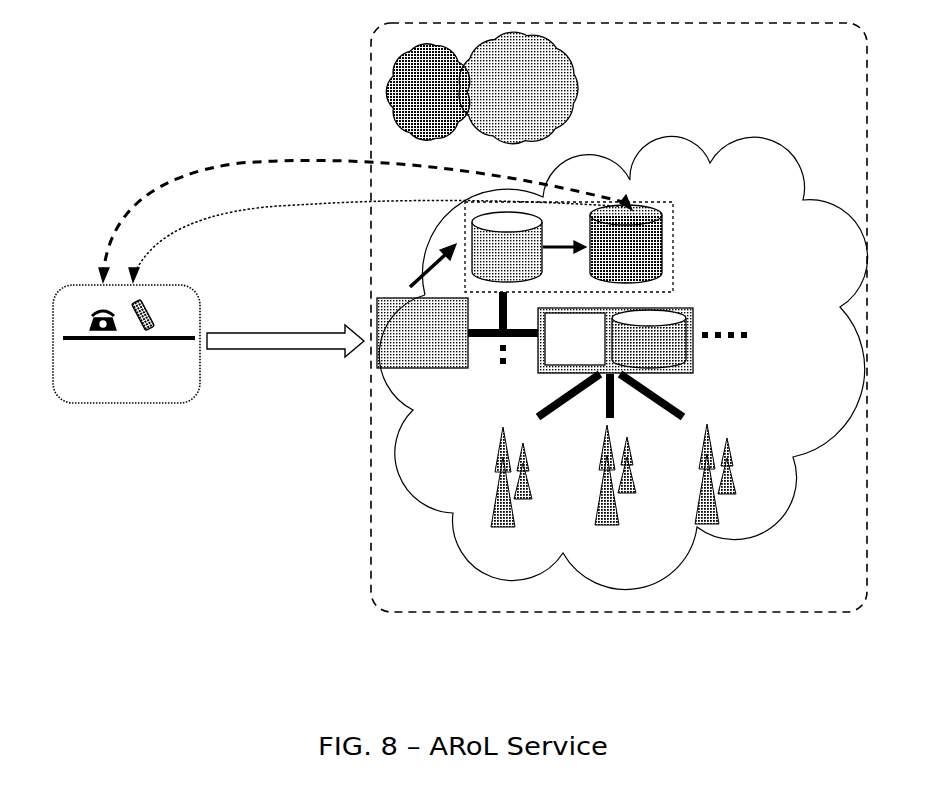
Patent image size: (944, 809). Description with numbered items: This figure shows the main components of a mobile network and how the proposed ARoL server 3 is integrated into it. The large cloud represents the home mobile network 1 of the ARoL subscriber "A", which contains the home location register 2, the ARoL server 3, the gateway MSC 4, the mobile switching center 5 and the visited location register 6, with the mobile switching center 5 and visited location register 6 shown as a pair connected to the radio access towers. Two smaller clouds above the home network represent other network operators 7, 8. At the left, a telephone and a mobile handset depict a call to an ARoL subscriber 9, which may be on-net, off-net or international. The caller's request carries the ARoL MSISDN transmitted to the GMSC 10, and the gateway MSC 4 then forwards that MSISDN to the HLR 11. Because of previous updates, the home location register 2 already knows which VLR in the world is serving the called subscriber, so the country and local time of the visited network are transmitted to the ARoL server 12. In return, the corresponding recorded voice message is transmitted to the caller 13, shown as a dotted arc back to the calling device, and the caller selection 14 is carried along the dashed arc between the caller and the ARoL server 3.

The home mobile network 1 is at (623, 362).
The home location register 2 is at (507, 247).
The ARoL server 3 is at (626, 244).
The gateway MSC 4 is at (422, 333).
The mobile switching center 5 is at (575, 339).
The visited location register 6 is at (649, 339).
The other network operator 7 is at (518, 88).
The other network operator 8 is at (428, 92).
The call to an ARoL subscriber 9 is at (126, 344).
The MSISDN transmission to GMSC 10 is at (285, 359).
The MSISDN transmission from GMSC to HLR 11 is at (425, 261).
The visited network country and local time transmission 12 is at (564, 265).
The recorded voice message transmission 13 is at (379, 235).
The caller selection 14 is at (365, 219).